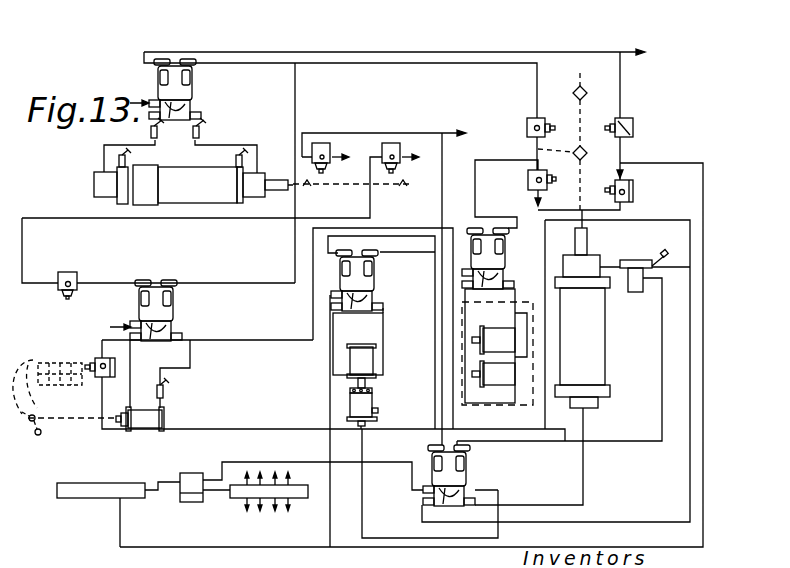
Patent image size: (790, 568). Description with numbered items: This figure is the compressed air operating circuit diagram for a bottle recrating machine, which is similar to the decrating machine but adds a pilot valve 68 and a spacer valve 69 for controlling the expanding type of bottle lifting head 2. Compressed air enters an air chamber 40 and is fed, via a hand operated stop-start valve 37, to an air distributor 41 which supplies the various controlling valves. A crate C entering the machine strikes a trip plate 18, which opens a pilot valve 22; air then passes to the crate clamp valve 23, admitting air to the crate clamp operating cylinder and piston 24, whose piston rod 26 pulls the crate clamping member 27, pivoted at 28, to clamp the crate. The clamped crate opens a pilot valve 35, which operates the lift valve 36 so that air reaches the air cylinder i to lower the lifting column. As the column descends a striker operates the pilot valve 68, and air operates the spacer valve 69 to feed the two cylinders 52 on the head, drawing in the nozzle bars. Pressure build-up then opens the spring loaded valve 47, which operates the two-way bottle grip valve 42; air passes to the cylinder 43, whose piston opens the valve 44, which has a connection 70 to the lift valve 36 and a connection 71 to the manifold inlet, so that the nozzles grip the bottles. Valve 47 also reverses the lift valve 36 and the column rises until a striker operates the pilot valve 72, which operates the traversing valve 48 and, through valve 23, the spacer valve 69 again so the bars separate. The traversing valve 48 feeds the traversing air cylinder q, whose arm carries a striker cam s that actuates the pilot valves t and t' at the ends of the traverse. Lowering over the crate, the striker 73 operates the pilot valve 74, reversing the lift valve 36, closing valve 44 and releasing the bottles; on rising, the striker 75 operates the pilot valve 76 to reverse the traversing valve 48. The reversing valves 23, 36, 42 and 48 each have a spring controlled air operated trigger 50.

The traversing valve 48 is at (180, 88).
The spring controlled air operated trigger 50 is at (187, 112).
The connection 71 is at (574, 87).
The striker 75 is at (587, 91).
The pilot valve 76 is at (622, 127).
The pilot valve 72 is at (530, 120).
The connection 70 is at (538, 146).
The striker 73 is at (587, 151).
The pilot valve 68 is at (528, 182).
The pilot valve 74 is at (633, 192).
The spacer valve 69 is at (487, 250).
The pilot valve 22 is at (72, 272).
The trip plate 18 is at (72, 299).
The crate clamp valve 23 is at (158, 308).
The pilot valve 35 is at (100, 358).
The two-way bottle grip valve 42 is at (350, 282).
The cylinder 43 is at (360, 362).
The valve 44 is at (357, 407).
The piston and cylinder unit 52 is at (498, 372).
The spring loaded valve 47 is at (637, 290).
The crate clamp operating cylinder and piston 24 is at (152, 417).
The bottle lifting head 2 is at (533, 405).
The lift valve 36 is at (453, 473).
The hand operated stop-start valve 37 is at (192, 478).
The air chamber 40 is at (97, 490).
The air distributor 41 is at (295, 492).
The piston rod 26 is at (78, 418).
The crate clamping member 27 is at (30, 434).
The pivot 28 is at (39, 435).
The crate C is at (50, 363).
The traversing air cylinder q is at (185, 190).
The pilot valve t is at (330, 129).
The pilot valve t' is at (401, 128).
The striker cam s is at (348, 183).
The air cylinder i is at (588, 357).